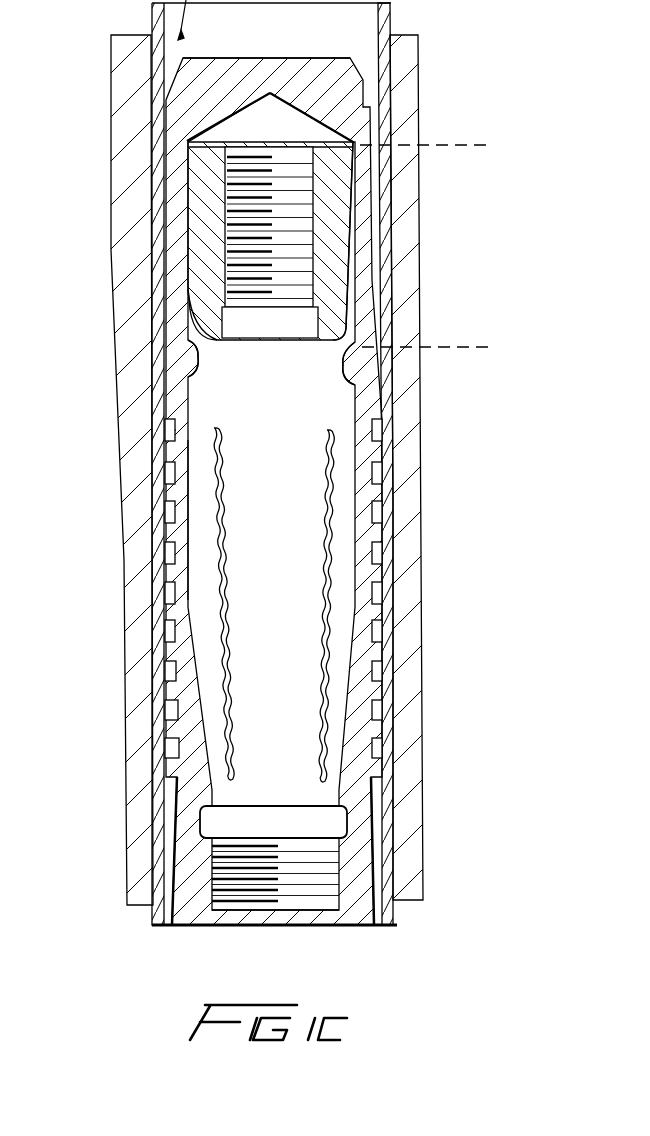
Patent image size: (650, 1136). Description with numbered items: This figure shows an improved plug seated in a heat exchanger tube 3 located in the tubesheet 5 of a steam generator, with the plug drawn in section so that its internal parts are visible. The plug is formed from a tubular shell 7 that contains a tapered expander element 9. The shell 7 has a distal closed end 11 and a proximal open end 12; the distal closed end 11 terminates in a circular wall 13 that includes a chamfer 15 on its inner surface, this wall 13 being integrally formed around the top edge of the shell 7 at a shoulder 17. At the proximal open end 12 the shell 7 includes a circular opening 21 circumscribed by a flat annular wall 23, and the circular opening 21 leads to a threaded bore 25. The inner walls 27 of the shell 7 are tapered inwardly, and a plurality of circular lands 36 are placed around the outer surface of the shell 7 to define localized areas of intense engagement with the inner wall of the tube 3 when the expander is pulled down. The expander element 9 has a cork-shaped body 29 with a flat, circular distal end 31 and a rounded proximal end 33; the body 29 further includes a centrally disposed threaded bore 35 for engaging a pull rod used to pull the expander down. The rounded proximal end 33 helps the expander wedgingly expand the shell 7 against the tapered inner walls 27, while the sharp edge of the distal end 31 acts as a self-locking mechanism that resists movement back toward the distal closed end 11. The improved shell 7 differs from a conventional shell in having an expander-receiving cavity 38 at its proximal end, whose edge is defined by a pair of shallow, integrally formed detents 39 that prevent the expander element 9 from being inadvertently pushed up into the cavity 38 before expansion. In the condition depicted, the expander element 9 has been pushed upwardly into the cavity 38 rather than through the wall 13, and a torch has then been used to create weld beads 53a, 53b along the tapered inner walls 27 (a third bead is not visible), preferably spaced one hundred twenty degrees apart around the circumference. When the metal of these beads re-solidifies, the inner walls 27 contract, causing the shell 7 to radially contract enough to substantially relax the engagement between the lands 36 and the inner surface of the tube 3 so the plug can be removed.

The heat exchanger tube 3 is at (156, 330).
The tubesheet 5 is at (127, 398).
The tubular shell 7 is at (170, 416).
The expander element 9 is at (200, 177).
The distal closed end 11 is at (209, 80).
The proximal open end 12 is at (235, 912).
The circular wall 13 is at (240, 69).
The chamfer 15 is at (266, 102).
The shoulder 17 is at (327, 115).
The circular opening 21 is at (350, 912).
The flat annular wall 23 is at (367, 927).
The threaded bore 25 is at (320, 912).
The inner walls 27 is at (191, 540).
The cork-shaped body 29 is at (343, 320).
The distal end 31 is at (213, 143).
The rounded proximal end 33 is at (200, 332).
The threaded bore 35 is at (312, 173).
The lands 36 is at (164, 457).
The expander-receiving cavity 38 is at (488, 145).
The detents 39 is at (194, 358).
The weld bead 53a is at (216, 672).
The weld bead 53b is at (330, 695).